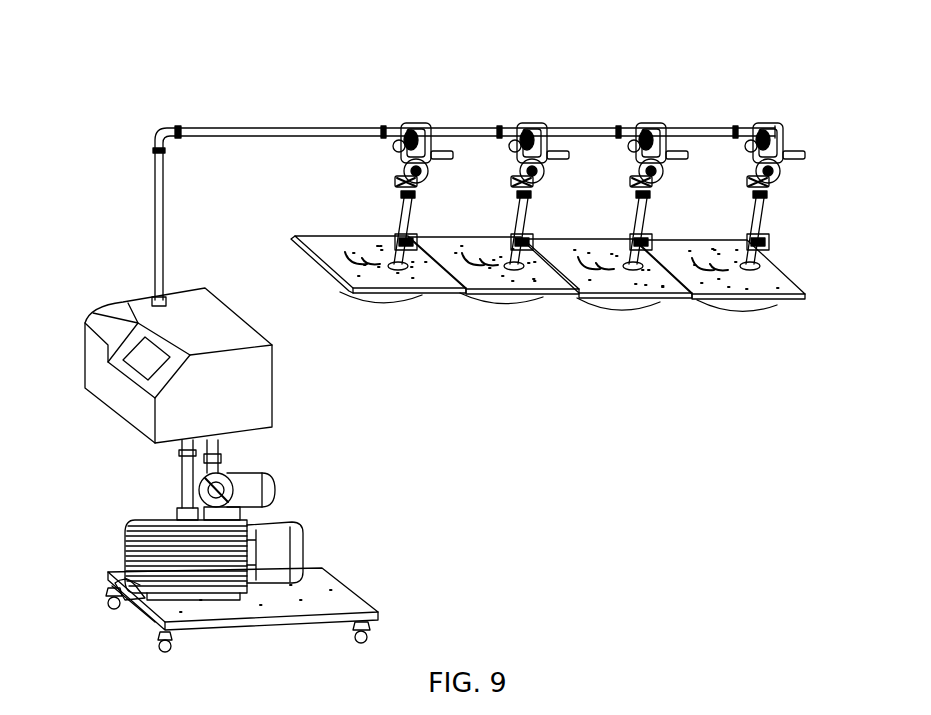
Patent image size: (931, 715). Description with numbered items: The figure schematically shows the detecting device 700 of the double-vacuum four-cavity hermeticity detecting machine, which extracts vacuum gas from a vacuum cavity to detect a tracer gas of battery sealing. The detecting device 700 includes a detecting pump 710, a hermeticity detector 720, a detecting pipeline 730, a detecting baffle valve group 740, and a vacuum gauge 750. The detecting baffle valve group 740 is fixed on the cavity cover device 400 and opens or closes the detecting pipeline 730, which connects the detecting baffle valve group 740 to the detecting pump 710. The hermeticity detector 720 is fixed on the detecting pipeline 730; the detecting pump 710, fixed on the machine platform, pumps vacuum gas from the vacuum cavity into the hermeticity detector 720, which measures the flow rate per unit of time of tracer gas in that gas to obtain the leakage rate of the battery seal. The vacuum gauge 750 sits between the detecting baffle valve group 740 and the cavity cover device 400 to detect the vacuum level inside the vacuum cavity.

The detecting device 700 is at (244, 29).
The detecting pump 710 is at (306, 541).
The hermeticity detector 720 is at (108, 396).
The detecting pipeline 730 is at (157, 197).
The detecting baffle valve group 740 is at (747, 128).
The vacuum gauge 750 is at (430, 235).
The cavity cover device 400 is at (717, 310).